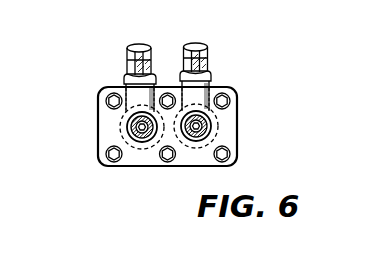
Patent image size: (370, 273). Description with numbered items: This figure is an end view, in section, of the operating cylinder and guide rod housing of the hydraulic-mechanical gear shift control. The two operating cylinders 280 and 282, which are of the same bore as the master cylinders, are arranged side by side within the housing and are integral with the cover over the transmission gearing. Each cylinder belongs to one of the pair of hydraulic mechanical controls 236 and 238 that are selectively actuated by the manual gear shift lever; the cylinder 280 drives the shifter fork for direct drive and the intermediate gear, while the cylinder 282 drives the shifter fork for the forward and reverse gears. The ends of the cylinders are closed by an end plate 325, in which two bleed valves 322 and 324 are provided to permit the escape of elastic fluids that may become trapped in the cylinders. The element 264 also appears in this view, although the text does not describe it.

The bleed valve 322 is at (147, 44).
The bleed valve 324 is at (206, 53).
The end plate 325 is at (209, 89).
The operating cylinder 282 is at (238, 106).
The hydraulic mechanical control 238 is at (204, 129).
The operating cylinder 280 is at (117, 132).
The left boss 264 is at (138, 130).
The hydraulic mechanical control 236 is at (141, 134).